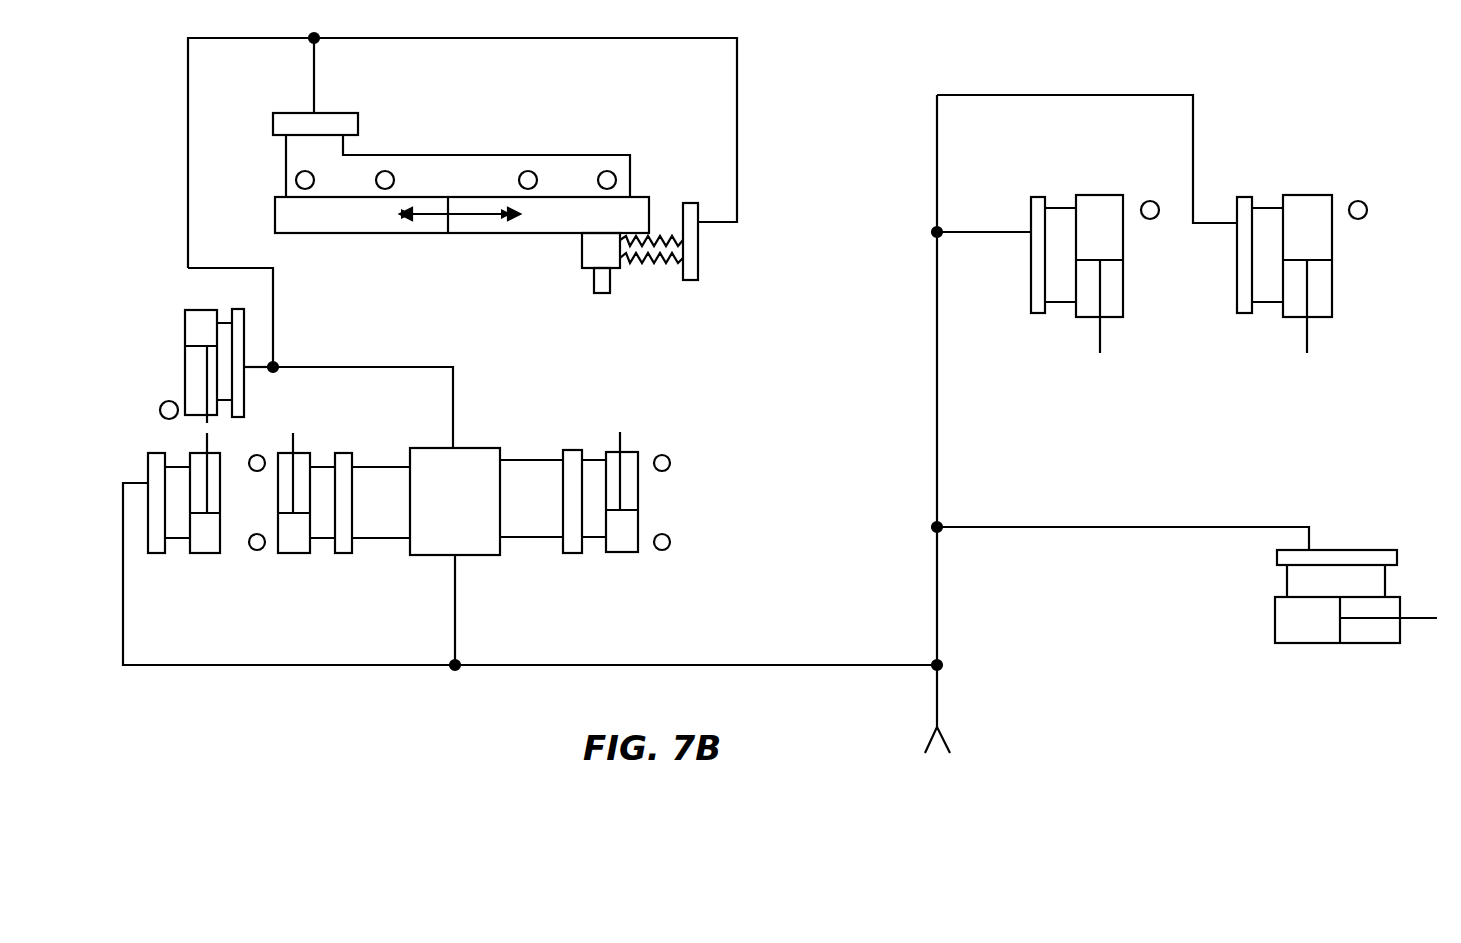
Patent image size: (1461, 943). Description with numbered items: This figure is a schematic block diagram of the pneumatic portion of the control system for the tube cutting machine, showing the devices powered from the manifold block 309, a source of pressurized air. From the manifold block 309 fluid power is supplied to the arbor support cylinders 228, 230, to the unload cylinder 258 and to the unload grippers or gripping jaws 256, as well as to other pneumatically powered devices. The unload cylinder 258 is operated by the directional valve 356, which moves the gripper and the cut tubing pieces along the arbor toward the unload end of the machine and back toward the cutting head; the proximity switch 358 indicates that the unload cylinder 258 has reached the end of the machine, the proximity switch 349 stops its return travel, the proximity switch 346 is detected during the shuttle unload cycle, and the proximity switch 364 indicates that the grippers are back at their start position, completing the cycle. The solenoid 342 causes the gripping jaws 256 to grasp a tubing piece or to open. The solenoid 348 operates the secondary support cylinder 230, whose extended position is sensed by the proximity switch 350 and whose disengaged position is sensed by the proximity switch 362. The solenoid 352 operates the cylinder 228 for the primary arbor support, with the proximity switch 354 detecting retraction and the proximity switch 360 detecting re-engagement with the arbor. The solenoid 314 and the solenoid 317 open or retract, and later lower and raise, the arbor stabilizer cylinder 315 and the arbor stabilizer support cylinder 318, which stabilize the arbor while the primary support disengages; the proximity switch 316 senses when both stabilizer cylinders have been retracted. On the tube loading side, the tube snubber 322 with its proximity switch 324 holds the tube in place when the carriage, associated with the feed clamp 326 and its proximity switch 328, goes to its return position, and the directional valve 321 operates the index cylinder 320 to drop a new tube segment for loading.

The directional valve 356 is at (333, 113).
The proximity switch 358 is at (296, 176).
The proximity switch 349 is at (385, 171).
The proximity switch 346 is at (528, 171).
The proximity switch 364 is at (616, 176).
The unload cylinder 258 is at (370, 233).
The gripping jaws 256 is at (582, 266).
The solenoid 342 is at (698, 270).
The arbor stabilizer cylinder 315 is at (185, 348).
The solenoid 314 is at (246, 310).
The proximity switch 316 is at (162, 404).
The solenoid 317 is at (160, 453).
The arbor stabilizer support cylinder 318 is at (222, 530).
The proximity switch 360 is at (258, 455).
The proximity switch 354 is at (258, 551).
The arbor support cylinder 228 is at (310, 452).
The solenoid 352 is at (340, 555).
The manifold block 309 is at (485, 556).
The solenoid 348 is at (583, 405).
The arbor support cylinder 230 is at (625, 452).
The proximity switch 350 is at (671, 463).
The proximity switch 362 is at (671, 543).
The tube snubber 322 is at (1058, 340).
The proximity switch 324 is at (1150, 200).
The feed clamp 326 is at (1268, 340).
The proximity switch 328 is at (1358, 200).
The directional valve 321 is at (1337, 550).
The index cylinder 320 is at (1272, 625).